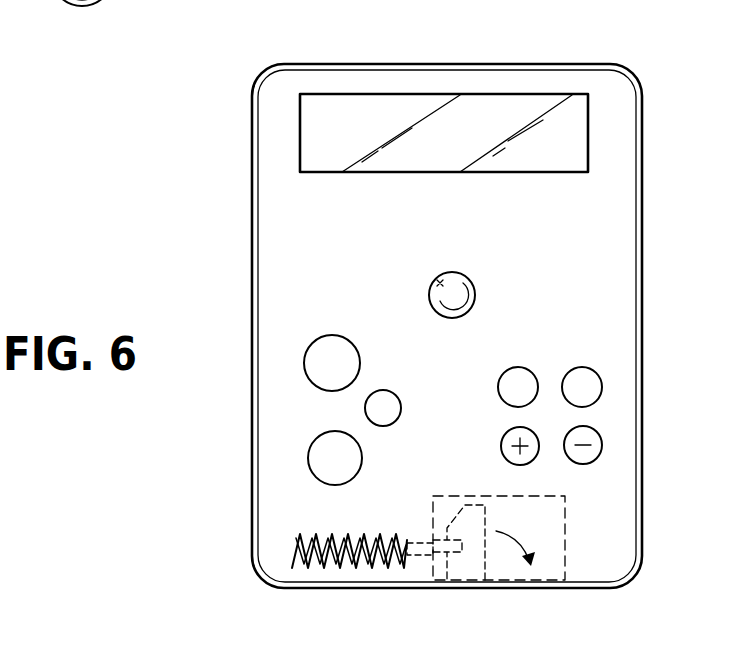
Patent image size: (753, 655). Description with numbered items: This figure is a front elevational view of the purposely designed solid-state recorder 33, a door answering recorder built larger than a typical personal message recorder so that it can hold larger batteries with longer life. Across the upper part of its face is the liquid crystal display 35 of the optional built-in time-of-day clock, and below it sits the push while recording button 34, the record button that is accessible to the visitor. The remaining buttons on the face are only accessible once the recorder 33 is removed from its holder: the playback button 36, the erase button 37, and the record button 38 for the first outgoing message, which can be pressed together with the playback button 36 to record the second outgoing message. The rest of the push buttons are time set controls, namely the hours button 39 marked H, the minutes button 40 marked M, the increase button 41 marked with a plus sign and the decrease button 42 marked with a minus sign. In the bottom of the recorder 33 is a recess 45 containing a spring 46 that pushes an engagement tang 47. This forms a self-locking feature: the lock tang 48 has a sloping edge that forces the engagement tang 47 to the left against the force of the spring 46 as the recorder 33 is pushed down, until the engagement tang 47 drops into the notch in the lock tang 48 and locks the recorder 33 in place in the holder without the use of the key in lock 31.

The lock 31 is at (119, 0).
The solid-state recorder 33 is at (658, 76).
The push while recording button 34 is at (440, 283).
The liquid crystal display 35 is at (340, 130).
The playback button 36 is at (318, 337).
The erase button 37 is at (388, 390).
The record button for outgoing message OGM1 38 is at (308, 468).
The hours button 39 is at (505, 368).
The minutes button 40 is at (585, 367).
The increase button 41 is at (501, 447).
The decrease button 42 is at (590, 464).
The recess 45 is at (565, 552).
The spring 46 is at (297, 548).
The engagement tang 47 is at (407, 570).
The lock tang 48 is at (470, 568).